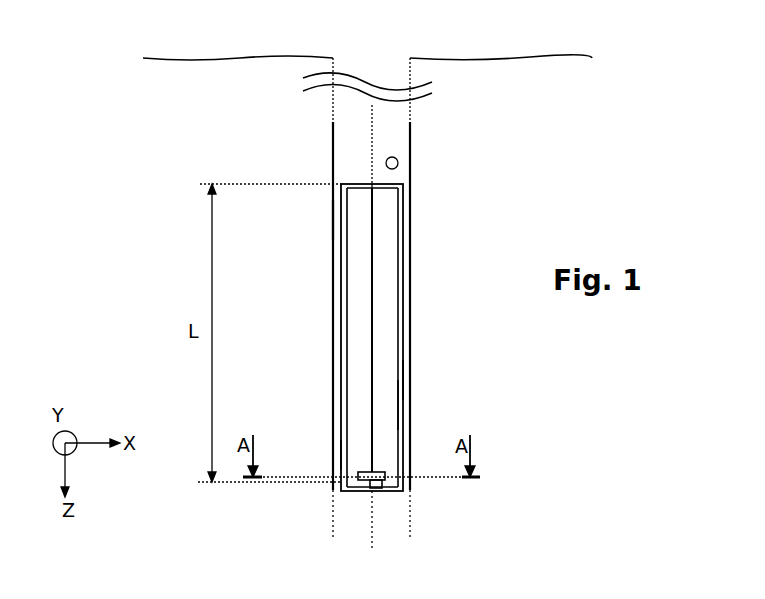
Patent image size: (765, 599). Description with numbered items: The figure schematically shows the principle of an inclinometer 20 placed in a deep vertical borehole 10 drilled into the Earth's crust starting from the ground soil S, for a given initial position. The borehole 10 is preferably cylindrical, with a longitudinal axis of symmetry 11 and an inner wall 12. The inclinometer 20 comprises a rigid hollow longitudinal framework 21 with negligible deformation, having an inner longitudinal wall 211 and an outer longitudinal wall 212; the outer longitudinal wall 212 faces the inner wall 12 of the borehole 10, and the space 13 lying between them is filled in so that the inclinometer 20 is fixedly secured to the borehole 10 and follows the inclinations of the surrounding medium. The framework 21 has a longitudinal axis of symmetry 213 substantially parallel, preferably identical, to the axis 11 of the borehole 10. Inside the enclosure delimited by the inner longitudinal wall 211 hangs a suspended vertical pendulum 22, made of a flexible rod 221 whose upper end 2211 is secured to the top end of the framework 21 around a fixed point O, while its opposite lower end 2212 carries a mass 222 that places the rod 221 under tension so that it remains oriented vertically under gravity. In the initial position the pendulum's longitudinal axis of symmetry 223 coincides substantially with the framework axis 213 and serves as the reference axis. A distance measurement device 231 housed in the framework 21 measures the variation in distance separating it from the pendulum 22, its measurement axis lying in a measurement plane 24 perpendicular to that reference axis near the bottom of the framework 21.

The ground soil S is at (483, 57).
The borehole 10 is at (350, 105).
The longitudinal axis of symmetry 11 is at (372, 153).
The inner wall 12 is at (338, 402).
The space 13 is at (333, 222).
The inclinometer 20 is at (407, 248).
The rigid hollow longitudinal framework 21 is at (403, 352).
The inner longitudinal wall 211 is at (391, 411).
The outer longitudinal wall 212 is at (403, 380).
The longitudinal axis of symmetry 213 is at (372, 138).
The suspended vertical pendulum 22 is at (360, 370).
The flexible rod 221 is at (372, 255).
The upper end 2211 is at (373, 187).
The lower end 2212 is at (370, 483).
The mass 222 is at (382, 490).
The longitudinal axis of symmetry 223 is at (372, 172).
The distance measurement device 231 is at (341, 453).
The measurement plane 24 is at (443, 478).
The fixed point O is at (388, 169).